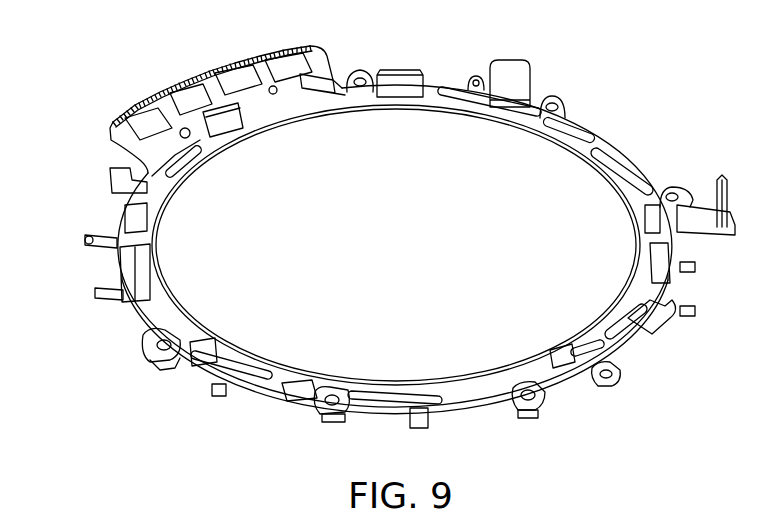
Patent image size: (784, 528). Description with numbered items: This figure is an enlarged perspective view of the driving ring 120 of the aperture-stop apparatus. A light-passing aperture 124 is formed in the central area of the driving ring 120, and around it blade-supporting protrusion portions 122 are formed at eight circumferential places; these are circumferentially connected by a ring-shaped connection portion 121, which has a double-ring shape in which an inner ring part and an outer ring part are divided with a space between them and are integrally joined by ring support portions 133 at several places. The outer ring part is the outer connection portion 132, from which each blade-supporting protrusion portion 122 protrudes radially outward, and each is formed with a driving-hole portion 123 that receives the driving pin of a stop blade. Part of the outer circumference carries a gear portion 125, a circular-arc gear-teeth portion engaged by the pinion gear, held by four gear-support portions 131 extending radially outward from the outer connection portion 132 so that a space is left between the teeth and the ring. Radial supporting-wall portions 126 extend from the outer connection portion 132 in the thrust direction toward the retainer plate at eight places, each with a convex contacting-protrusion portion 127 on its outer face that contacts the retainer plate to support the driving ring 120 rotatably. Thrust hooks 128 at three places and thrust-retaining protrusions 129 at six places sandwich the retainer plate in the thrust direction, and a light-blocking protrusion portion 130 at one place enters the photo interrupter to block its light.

The driving ring 120 is at (128, 296).
The connection portion 121 is at (155, 253).
The blade-supporting protrusion portion 122 is at (147, 351).
The driving-hole portion 123 is at (167, 359).
The light-passing aperture 124 is at (490, 205).
The gear portion 125 is at (118, 107).
The radial supporting-wall portion 126 is at (619, 306).
The contacting-protrusion portion 127 is at (645, 337).
The thrust hook 128 is at (579, 364).
The thrust-retaining protrusion 129 is at (619, 374).
The light-blocking protrusion portion 130 is at (720, 175).
The gear-support portion 131 is at (313, 62).
The outer connection portion 132 is at (120, 217).
The ring support portion 133 is at (117, 182).